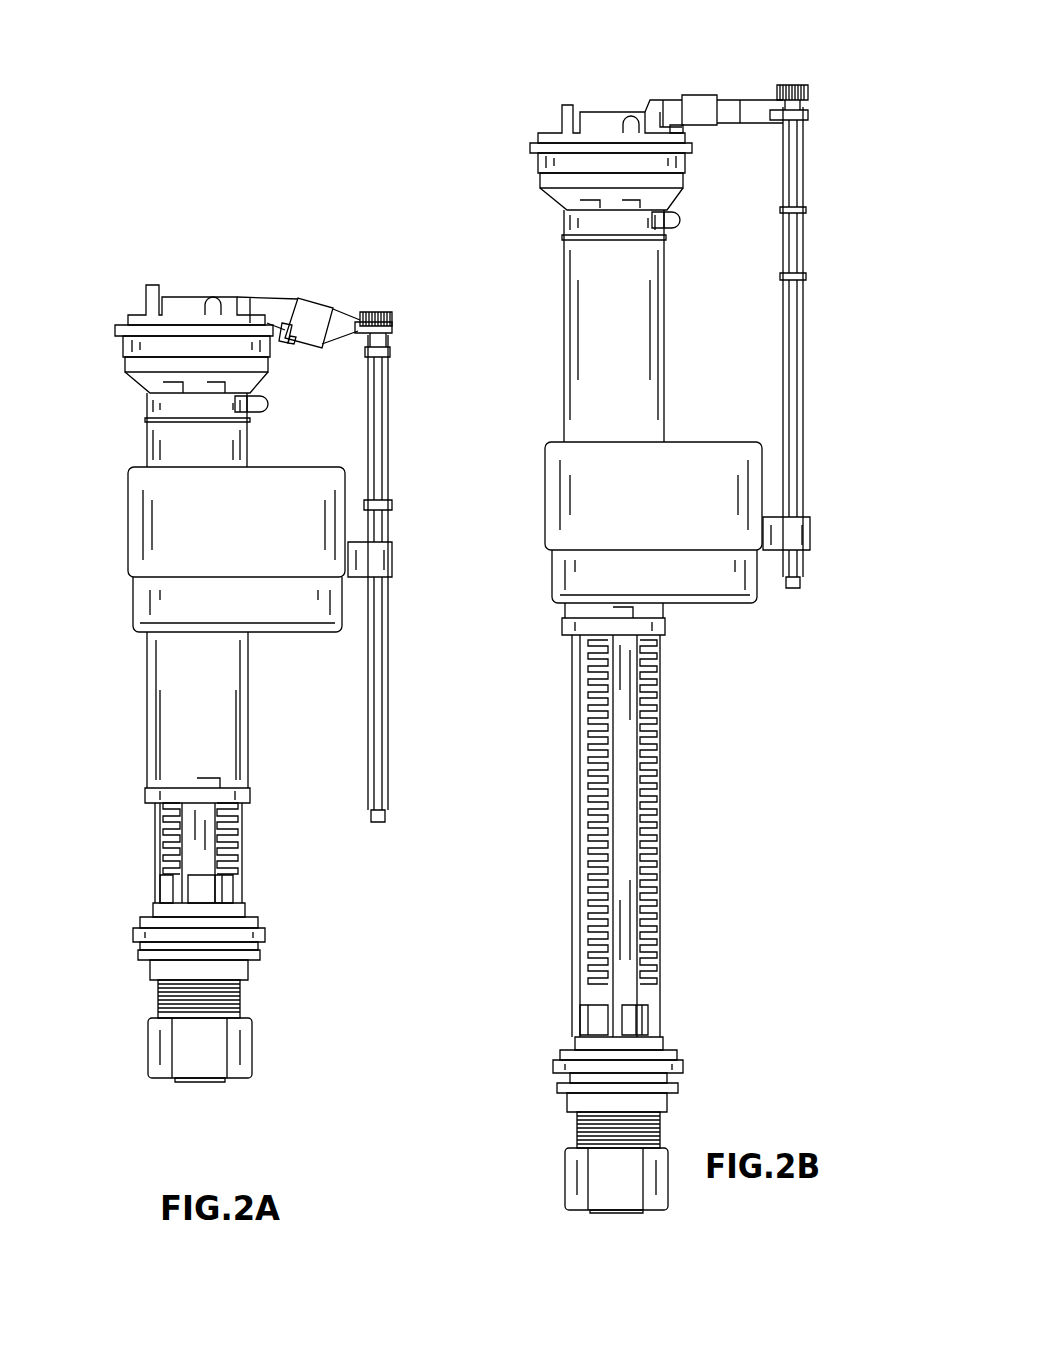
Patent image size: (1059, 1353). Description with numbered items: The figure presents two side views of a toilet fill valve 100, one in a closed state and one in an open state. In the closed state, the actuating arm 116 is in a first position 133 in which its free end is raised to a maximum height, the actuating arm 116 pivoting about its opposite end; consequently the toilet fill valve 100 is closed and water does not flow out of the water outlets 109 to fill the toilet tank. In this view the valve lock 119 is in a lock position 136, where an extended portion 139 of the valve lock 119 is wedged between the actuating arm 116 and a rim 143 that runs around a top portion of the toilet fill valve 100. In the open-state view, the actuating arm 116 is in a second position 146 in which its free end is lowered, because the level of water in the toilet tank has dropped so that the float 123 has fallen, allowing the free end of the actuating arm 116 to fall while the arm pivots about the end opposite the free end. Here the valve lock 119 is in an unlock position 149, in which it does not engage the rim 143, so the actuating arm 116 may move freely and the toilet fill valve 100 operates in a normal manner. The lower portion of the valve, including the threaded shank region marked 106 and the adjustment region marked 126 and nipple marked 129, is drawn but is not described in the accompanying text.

In FIG. 2A, the toilet fill valve 100 is at (285, 199).
In FIG. 2B, the toilet fill valve 100 is at (488, 65).
In FIG. 2A, the threaded shank and mounting nut 106 is at (208, 1093).
In FIG. 2B, the threaded shank and mounting nut 106 is at (650, 1217).
In FIG. 2A, the water outlets 109 is at (213, 892).
In FIG. 2B, the water outlets 109 is at (643, 1020).
In FIG. 2A, the actuating arm 116 is at (265, 300).
In FIG. 2B, the actuating arm 116 is at (750, 107).
In FIG. 2A, the valve lock 119 is at (320, 312).
In FIG. 2B, the valve lock 119 is at (700, 100).
In FIG. 2A, the float 123 is at (147, 532).
In FIG. 2B, the float 123 is at (562, 507).
In FIG. 2A, the float rod 126 is at (387, 472).
In FIG. 2B, the float rod 126 is at (800, 365).
In FIG. 2A, the refill tube nipple 129 is at (262, 410).
In FIG. 2B, the refill tube nipple 129 is at (678, 222).
In FIG. 2B, the first position 133 is at (823, 108).
In FIG. 2B, the lock position 136 is at (683, 67).
In FIG. 2A, the extended portion 139 is at (295, 348).
In FIG. 2B, the extended portion 139 is at (697, 132).
In FIG. 2A, the rim 143 is at (122, 325).
In FIG. 2B, the rim 143 is at (540, 143).
In FIG. 2A, the second position 146 is at (400, 337).
In FIG. 2A, the unlock position 149 is at (312, 288).